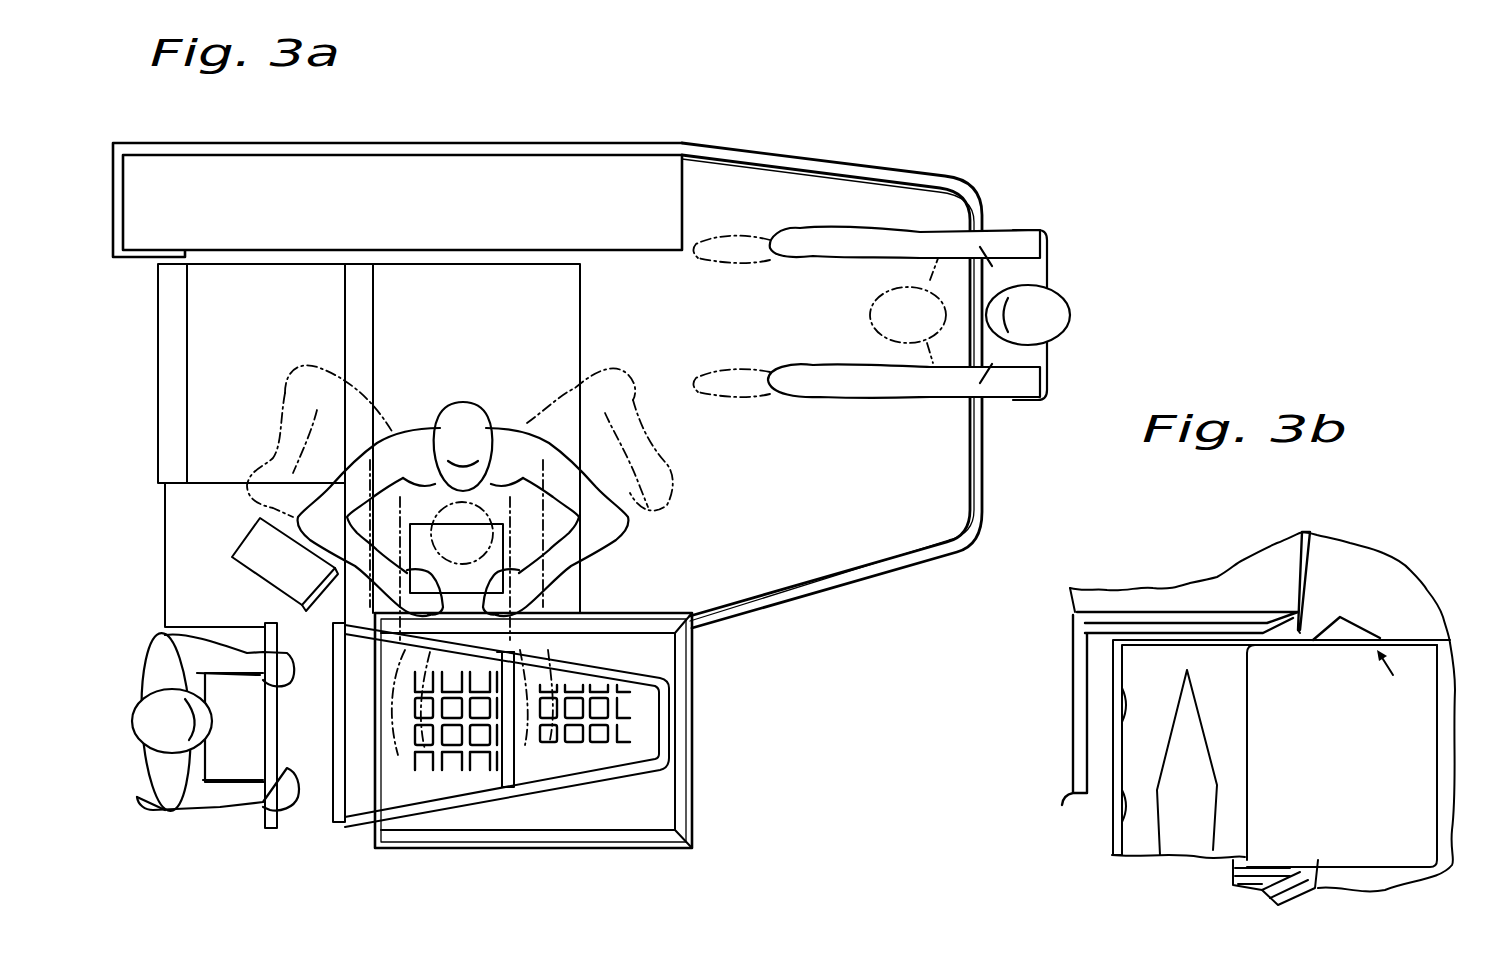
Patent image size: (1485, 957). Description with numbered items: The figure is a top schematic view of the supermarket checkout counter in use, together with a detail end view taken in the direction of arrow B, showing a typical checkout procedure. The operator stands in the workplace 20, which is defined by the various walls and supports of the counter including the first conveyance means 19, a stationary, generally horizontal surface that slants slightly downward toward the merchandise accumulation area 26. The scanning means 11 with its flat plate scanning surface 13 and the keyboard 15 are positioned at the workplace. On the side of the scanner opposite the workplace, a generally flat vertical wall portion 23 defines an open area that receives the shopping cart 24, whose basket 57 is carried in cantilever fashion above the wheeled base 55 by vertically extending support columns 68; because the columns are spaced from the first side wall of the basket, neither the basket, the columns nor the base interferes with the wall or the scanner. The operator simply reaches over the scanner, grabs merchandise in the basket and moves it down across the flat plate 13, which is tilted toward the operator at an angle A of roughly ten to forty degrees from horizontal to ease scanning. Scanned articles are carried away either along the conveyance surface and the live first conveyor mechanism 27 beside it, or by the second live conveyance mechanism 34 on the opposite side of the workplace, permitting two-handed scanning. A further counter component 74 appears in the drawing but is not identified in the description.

In FIG. 3A, the scanning means 11 is at (516, 534).
In FIG. 3B, the scanning means 11 is at (1326, 616).
In FIG. 3B, the flat plate scanning surface 13 is at (1353, 620).
In FIG. 3A, the keyboard 15 is at (296, 579).
In FIG. 3A, the first conveyance means 19 is at (790, 520).
In FIG. 3B, the workplace 20 is at (1441, 626).
In FIG. 3A, the vertical wall portion 23 is at (420, 688).
In FIG. 3B, the vertical wall portion 23 is at (1235, 845).
In FIG. 3A, the shopping cart 24 is at (532, 796).
In FIG. 3B, the shopping cart 24 is at (1072, 644).
In FIG. 3A, the merchandise accumulation area 26 is at (832, 308).
In FIG. 3A, the live first conveyor mechanism 27 is at (178, 383).
In FIG. 3A, the second live conveyance mechanism 34 is at (455, 234).
In FIG. 3B, the wheeled base 55 is at (1302, 877).
In FIG. 3A, the basket 57 is at (700, 823).
In FIG. 3B, the basket 57 is at (1297, 560).
In FIG. 3B, the vertically extending support columns 68 is at (1113, 803).
In FIG. 3A, the grid tray 74 is at (603, 735).
In FIG. 3B, the angle A is at (1391, 627).
In FIG. 3A, the arrow B is at (564, 749).